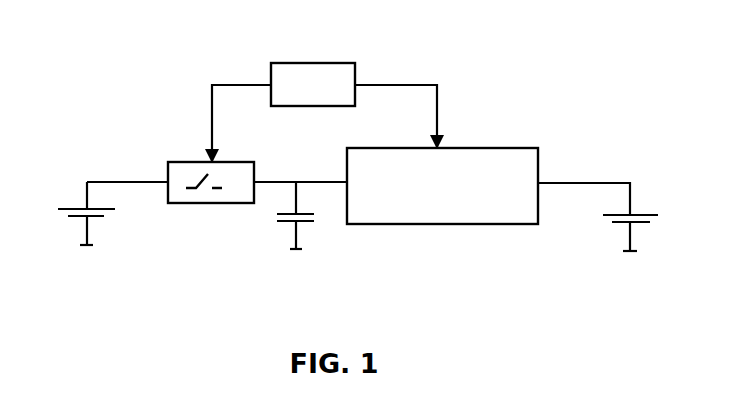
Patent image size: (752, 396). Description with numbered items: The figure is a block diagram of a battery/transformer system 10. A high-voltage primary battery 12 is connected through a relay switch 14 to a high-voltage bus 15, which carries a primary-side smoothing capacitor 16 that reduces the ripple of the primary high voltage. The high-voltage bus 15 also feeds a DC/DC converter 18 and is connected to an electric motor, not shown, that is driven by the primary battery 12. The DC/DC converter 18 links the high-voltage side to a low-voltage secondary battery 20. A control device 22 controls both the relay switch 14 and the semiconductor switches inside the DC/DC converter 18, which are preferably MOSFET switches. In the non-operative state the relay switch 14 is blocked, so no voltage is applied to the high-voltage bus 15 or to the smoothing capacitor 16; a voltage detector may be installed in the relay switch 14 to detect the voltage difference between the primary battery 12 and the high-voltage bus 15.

The battery/transformer system 10 is at (105, 59).
The high-voltage primary battery 12 is at (60, 195).
The relay switch 14 is at (182, 167).
The high-voltage bus 15 is at (275, 178).
The primary-side smoothing capacitor 16 is at (252, 224).
The DC/DC converter 18 is at (479, 165).
The low-voltage secondary battery 20 is at (657, 195).
The control device 22 is at (340, 70).